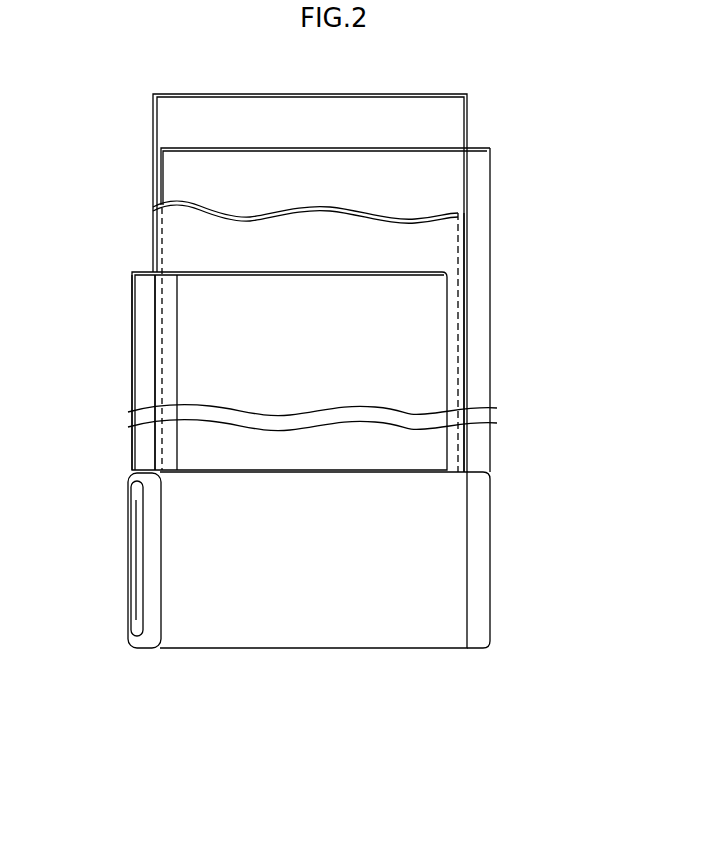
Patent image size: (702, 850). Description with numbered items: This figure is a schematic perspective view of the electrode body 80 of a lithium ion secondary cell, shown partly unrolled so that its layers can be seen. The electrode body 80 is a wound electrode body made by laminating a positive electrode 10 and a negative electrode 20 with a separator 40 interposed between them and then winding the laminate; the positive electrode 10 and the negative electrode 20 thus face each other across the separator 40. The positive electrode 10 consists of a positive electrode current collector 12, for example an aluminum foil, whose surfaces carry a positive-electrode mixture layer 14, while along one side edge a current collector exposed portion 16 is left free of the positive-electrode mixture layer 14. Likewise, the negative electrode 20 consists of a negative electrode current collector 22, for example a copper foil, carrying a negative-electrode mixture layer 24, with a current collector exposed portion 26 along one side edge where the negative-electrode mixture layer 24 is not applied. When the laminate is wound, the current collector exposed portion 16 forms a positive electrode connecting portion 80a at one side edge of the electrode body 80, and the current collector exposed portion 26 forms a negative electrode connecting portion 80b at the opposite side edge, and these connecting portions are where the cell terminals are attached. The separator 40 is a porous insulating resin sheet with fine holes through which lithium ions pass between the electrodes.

The positive electrode 10 is at (132, 340).
The positive electrode current collector 12 is at (133, 403).
The positive-electrode mixture layer 14 is at (188, 290).
The current collector exposed portion 16 is at (145, 371).
The negative electrode 20 is at (490, 220).
The negative electrode current collector 22 is at (487, 317).
The negative-electrode mixture layer 24 is at (455, 170).
The current collector exposed portion 26 is at (473, 287).
The separator 40 is at (173, 115).
The electrode body 80 is at (367, 630).
The positive electrode connecting portion 80a is at (148, 635).
The negative electrode connecting portion 80b is at (478, 643).